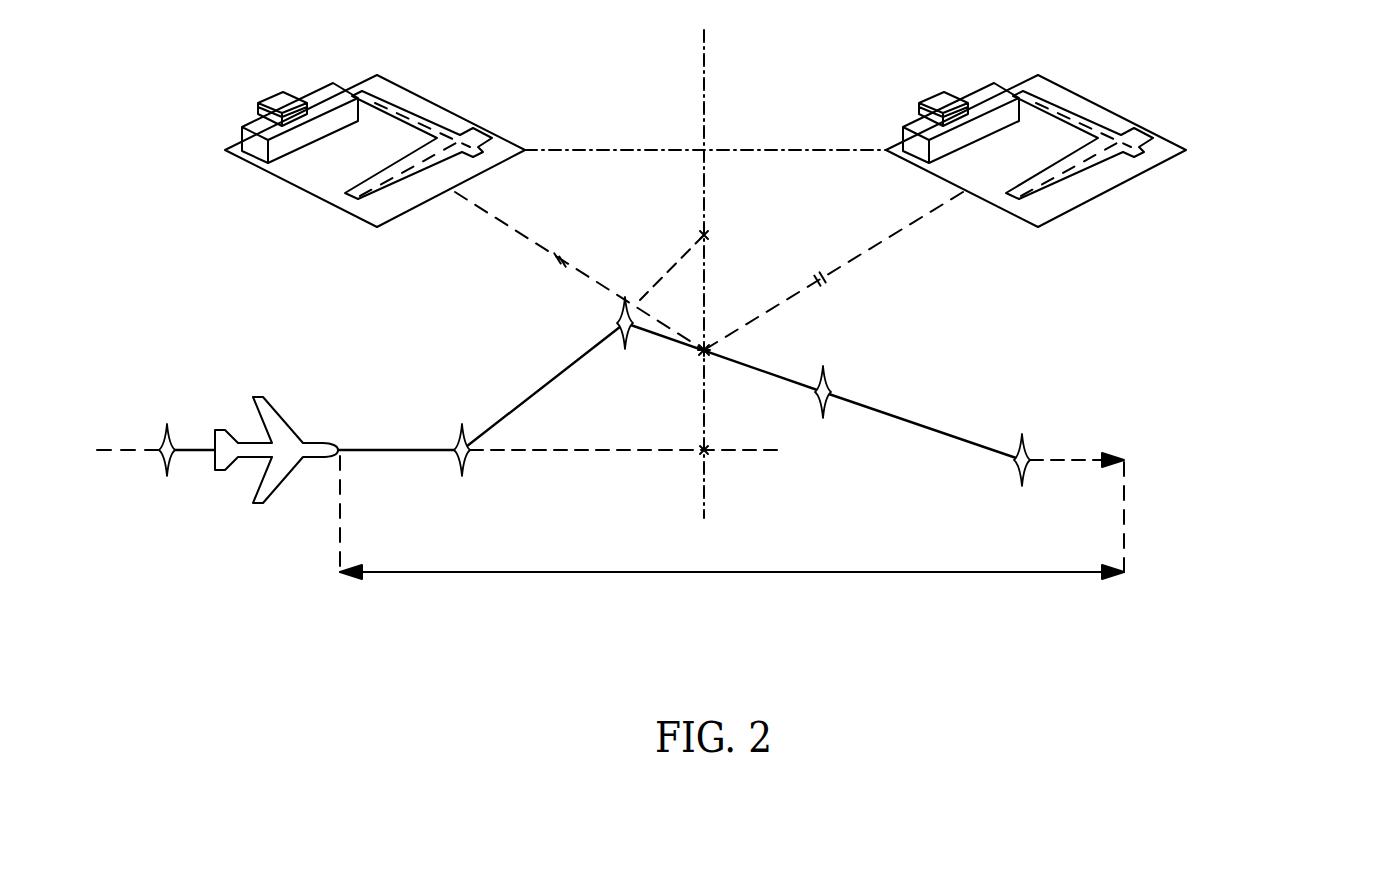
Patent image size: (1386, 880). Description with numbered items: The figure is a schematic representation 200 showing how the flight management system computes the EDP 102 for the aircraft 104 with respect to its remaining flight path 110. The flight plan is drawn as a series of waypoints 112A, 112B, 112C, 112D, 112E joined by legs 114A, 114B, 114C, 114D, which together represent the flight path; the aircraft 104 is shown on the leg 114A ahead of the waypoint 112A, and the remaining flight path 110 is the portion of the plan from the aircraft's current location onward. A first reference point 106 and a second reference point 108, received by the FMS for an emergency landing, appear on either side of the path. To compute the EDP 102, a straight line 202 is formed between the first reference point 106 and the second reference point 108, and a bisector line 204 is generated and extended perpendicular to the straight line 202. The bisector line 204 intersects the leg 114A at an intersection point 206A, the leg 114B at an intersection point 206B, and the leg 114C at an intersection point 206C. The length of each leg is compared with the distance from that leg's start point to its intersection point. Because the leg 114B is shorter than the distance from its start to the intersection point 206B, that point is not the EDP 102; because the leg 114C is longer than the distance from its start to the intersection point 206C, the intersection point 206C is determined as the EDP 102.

The schematic representation 200 is at (718, 361).
The EDP 102 is at (705, 352).
The aircraft 104 is at (270, 416).
The first reference point 106 is at (316, 189).
The second reference point 108 is at (1097, 190).
The remaining flight path 110 is at (738, 573).
The waypoint 112A is at (167, 478).
The waypoint 112B is at (467, 468).
The waypoint 112C is at (620, 297).
The waypoint 112D is at (831, 379).
The waypoint 112E is at (1031, 451).
The leg 114A is at (399, 453).
The leg 114B is at (541, 392).
The leg 114C is at (750, 365).
The leg 114D is at (925, 427).
The straight line 202 is at (618, 149).
The bisector line 204 is at (705, 57).
The intersection point 206A is at (708, 452).
The intersection point 206B is at (705, 236).
The intersection point 206C is at (708, 349).